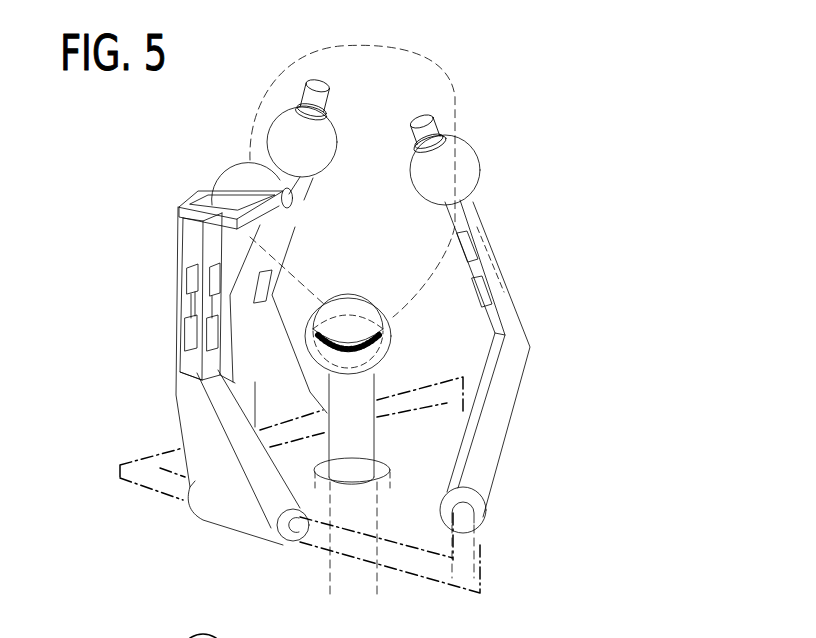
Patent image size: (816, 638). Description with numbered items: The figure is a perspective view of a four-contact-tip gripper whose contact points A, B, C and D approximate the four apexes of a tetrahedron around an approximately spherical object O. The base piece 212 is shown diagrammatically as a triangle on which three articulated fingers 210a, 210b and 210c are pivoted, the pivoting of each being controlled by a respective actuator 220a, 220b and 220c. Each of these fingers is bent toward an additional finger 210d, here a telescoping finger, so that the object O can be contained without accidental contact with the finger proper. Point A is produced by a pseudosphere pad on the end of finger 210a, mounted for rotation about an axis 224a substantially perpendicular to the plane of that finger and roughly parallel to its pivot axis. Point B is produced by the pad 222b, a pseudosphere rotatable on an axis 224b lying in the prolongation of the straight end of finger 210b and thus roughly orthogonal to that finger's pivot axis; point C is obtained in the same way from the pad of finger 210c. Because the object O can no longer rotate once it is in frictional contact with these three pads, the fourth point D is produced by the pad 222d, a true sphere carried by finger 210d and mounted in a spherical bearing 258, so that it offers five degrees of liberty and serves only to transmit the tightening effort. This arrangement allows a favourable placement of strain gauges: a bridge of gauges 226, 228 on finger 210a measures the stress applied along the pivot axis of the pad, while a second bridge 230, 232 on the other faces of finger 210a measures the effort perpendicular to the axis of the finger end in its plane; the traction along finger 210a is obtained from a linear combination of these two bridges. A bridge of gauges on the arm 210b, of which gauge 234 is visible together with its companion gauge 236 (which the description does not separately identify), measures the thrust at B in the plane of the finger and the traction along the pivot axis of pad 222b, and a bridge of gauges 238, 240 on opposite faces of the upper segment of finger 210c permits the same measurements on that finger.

The articulated finger 210a is at (195, 428).
The articulated finger 210b is at (500, 427).
The articulated finger 210c is at (297, 397).
The telescoping finger 210d is at (363, 448).
The base piece 212 is at (470, 545).
The actuator 220a is at (270, 526).
The actuator 220b is at (487, 503).
The actuator 220c is at (278, 412).
The contact pad 222b is at (473, 167).
The contact pad 222d is at (438, 295).
The axis 224a is at (292, 202).
The axis 224b is at (423, 117).
The strain gauge 226 is at (197, 325).
The strain gauge 228 is at (177, 272).
The strain gauge 230 is at (192, 308).
The strain gauge 232 is at (238, 317).
The strain gauge 234 is at (480, 267).
The guide rod (hidden) 236 is at (506, 260).
The strain gauge 238 is at (266, 270).
The strain gauge 240 is at (238, 257).
The spherical bearing 258 is at (390, 358).
The contact point A is at (271, 185).
The contact point B is at (423, 197).
The contact point C is at (329, 142).
The contact point D is at (350, 304).
The object O is at (312, 53).